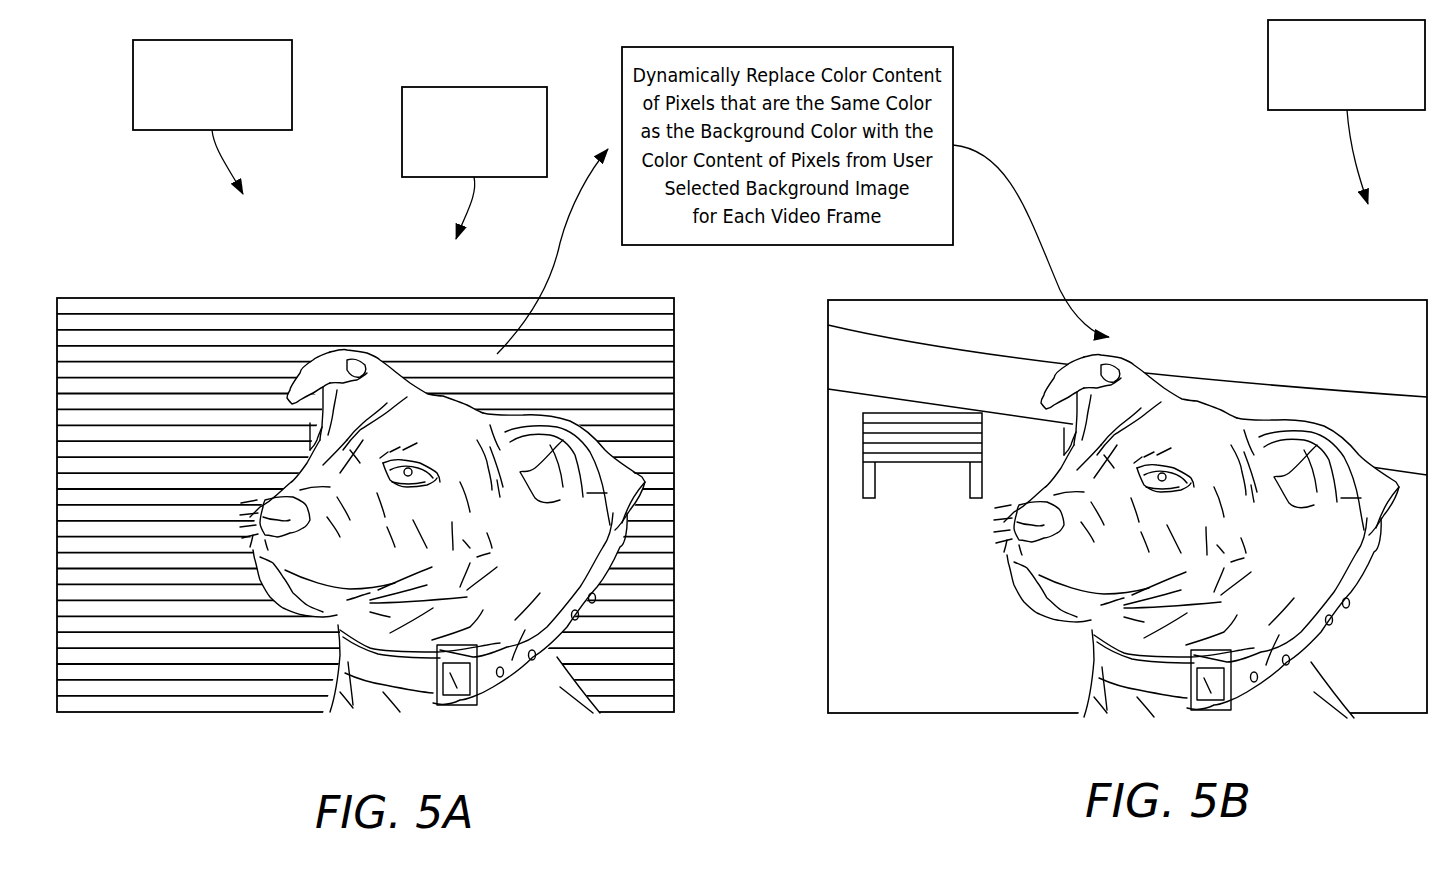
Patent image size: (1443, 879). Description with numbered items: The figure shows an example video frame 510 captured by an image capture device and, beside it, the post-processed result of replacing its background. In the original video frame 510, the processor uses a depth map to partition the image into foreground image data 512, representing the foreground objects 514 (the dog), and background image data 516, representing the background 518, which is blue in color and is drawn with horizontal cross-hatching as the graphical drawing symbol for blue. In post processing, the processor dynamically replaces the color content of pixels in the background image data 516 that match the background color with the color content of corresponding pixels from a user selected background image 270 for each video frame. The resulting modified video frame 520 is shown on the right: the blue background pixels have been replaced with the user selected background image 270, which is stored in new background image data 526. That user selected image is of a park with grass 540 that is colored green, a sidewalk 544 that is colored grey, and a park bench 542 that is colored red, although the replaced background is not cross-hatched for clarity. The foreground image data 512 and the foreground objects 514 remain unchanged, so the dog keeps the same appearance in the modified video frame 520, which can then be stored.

In FIG. 5A, the video frame 510 is at (365, 200).
In FIG. 5A, the foreground image data 512 is at (474, 163).
In FIG. 5A, the foreground objects 514 is at (430, 395).
In FIG. 5B, the foreground objects 514 is at (1204, 404).
In FIG. 5A, the background image data 516 is at (212, 117).
In FIG. 5A, the background 518 is at (226, 357).
In FIG. 5B, the modified video frame 520 is at (1102, 215).
In FIG. 5B, the new background image data 526 is at (1346, 112).
In FIG. 5B, the grass 540 is at (1248, 332).
In FIG. 5B, the park bench 542 is at (944, 466).
In FIG. 5B, the sidewalk 544 is at (1290, 399).
In FIG. 5B, the user selected background image 270 is at (1375, 354).